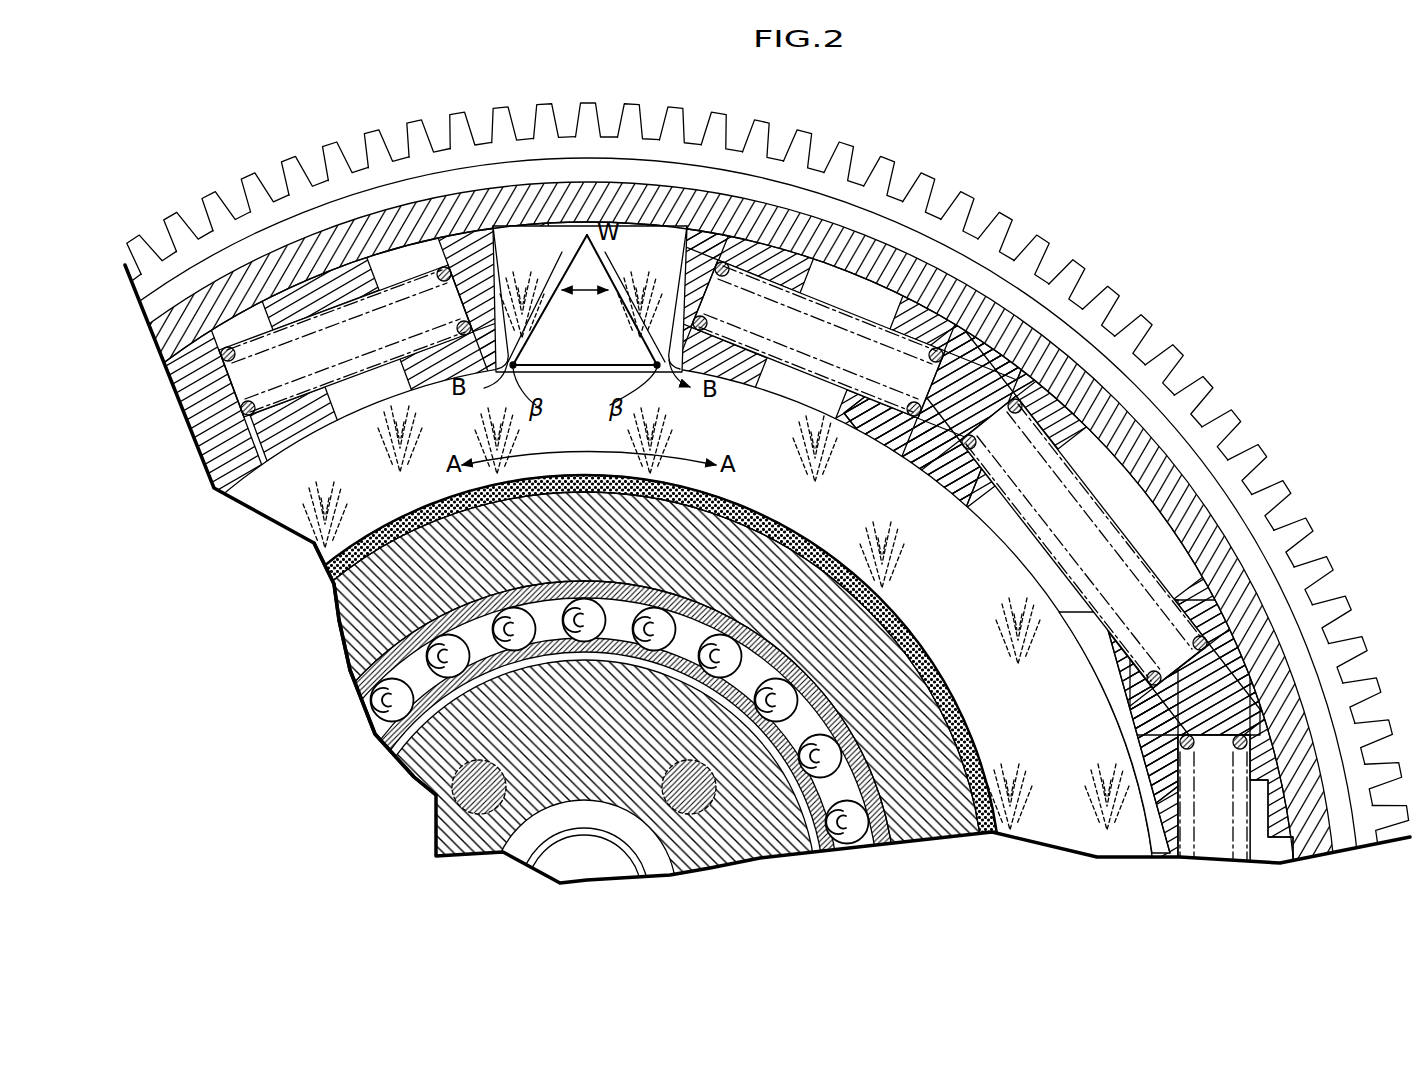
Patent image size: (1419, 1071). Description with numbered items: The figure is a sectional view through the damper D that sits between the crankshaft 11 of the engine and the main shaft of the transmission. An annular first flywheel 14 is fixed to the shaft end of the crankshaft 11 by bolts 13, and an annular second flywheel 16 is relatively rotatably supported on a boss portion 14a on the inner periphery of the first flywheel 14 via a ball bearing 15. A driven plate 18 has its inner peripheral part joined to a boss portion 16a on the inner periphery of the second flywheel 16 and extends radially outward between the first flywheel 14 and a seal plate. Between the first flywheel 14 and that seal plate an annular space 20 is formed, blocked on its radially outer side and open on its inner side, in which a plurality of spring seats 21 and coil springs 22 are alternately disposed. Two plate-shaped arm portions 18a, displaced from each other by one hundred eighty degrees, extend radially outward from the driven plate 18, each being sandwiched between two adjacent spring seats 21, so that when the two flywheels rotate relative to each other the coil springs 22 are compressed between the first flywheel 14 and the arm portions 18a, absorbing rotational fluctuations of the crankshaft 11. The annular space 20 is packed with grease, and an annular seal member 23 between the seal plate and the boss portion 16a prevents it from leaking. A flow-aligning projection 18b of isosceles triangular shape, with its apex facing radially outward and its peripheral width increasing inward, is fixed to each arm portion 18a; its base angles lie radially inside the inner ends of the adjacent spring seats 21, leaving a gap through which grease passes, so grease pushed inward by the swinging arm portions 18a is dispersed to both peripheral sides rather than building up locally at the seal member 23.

The crankshaft 11 is at (590, 858).
The bolts 13 is at (469, 789).
The first flywheel 14 is at (921, 250).
The boss portion 14a is at (425, 778).
The ball bearing 15 is at (672, 594).
The second flywheel 16 is at (602, 548).
The boss portion 16a is at (357, 628).
The driven plate 18 is at (822, 413).
The arm portion 18a is at (659, 238).
The flow-aligning projection 18b is at (571, 273).
The annular space 20 is at (358, 293).
The spring seats 21 is at (430, 367).
The coil springs 22 is at (444, 281).
The seal member 23 is at (741, 512).
The damper D is at (1153, 306).